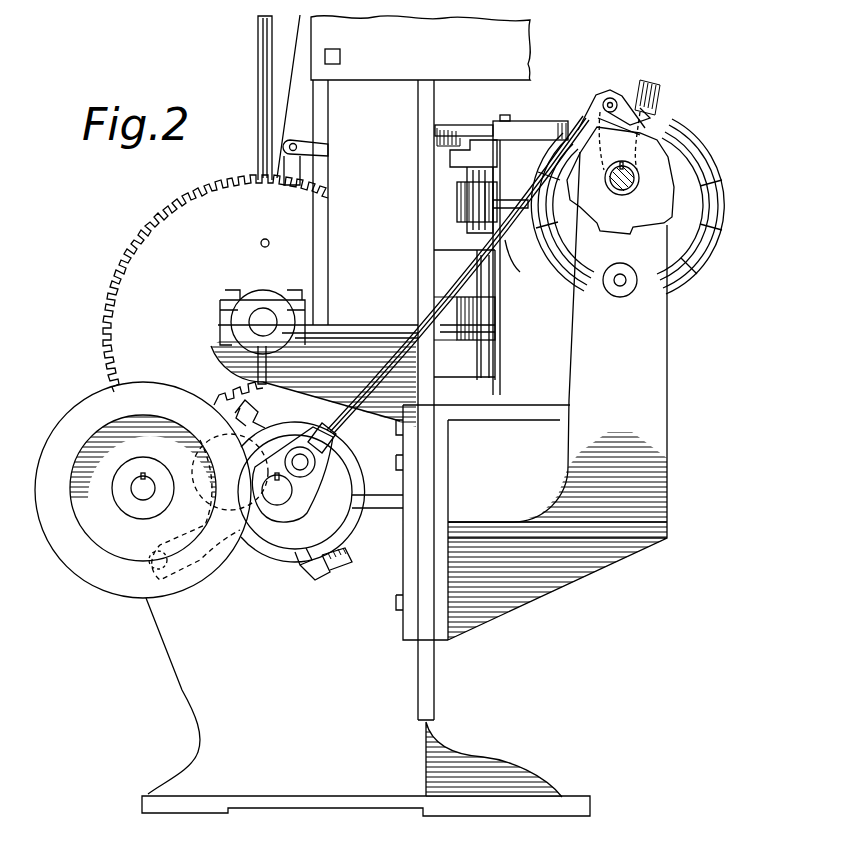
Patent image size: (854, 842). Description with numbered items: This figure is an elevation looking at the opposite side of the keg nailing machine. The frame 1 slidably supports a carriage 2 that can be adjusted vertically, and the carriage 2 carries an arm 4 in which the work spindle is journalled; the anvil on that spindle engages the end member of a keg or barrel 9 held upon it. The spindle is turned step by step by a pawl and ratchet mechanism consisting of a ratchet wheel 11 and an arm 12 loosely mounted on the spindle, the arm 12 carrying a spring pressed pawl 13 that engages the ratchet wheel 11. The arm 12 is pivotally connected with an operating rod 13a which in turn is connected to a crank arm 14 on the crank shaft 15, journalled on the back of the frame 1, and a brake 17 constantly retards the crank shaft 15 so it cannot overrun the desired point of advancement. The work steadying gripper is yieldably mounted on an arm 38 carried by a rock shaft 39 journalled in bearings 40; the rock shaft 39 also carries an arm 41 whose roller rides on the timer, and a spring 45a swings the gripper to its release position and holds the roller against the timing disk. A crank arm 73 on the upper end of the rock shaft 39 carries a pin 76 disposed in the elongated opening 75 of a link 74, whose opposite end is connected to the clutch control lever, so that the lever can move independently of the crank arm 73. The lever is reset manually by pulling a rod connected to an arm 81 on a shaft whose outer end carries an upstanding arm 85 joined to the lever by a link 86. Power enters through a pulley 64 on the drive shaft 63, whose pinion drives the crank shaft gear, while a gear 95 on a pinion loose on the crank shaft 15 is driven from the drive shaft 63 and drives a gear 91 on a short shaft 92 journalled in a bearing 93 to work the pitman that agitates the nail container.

The frame 1 is at (384, 136).
The carriage 2 is at (648, 558).
The arm 4 is at (670, 370).
The keg or barrel 9 is at (702, 262).
The ratchet wheel 11 is at (660, 170).
The arm 12 is at (628, 95).
The spring pressed pawl 13 is at (652, 126).
The operating rod 13a is at (522, 262).
The crank arm 14 is at (300, 490).
The crank shaft 15 is at (277, 505).
The brake 17 is at (302, 567).
The arm 38 is at (470, 218).
The rock shaft 39 is at (470, 185).
The bearings 40 is at (498, 290).
The arm 41 is at (455, 328).
The spring 45a is at (443, 148).
The drive shaft 63 is at (136, 498).
The pulley 64 is at (68, 552).
The crank arm 73 is at (520, 186).
The link 74 is at (452, 131).
The elongated opening 75 is at (546, 128).
The pin 76 is at (508, 121).
The arm 81 is at (302, 100).
The upstanding arm 85 is at (300, 167).
The link 86 is at (318, 152).
The gear 91 is at (215, 283).
The short shaft 92 is at (267, 318).
The bearing 93 is at (250, 342).
The gear 95 is at (329, 450).